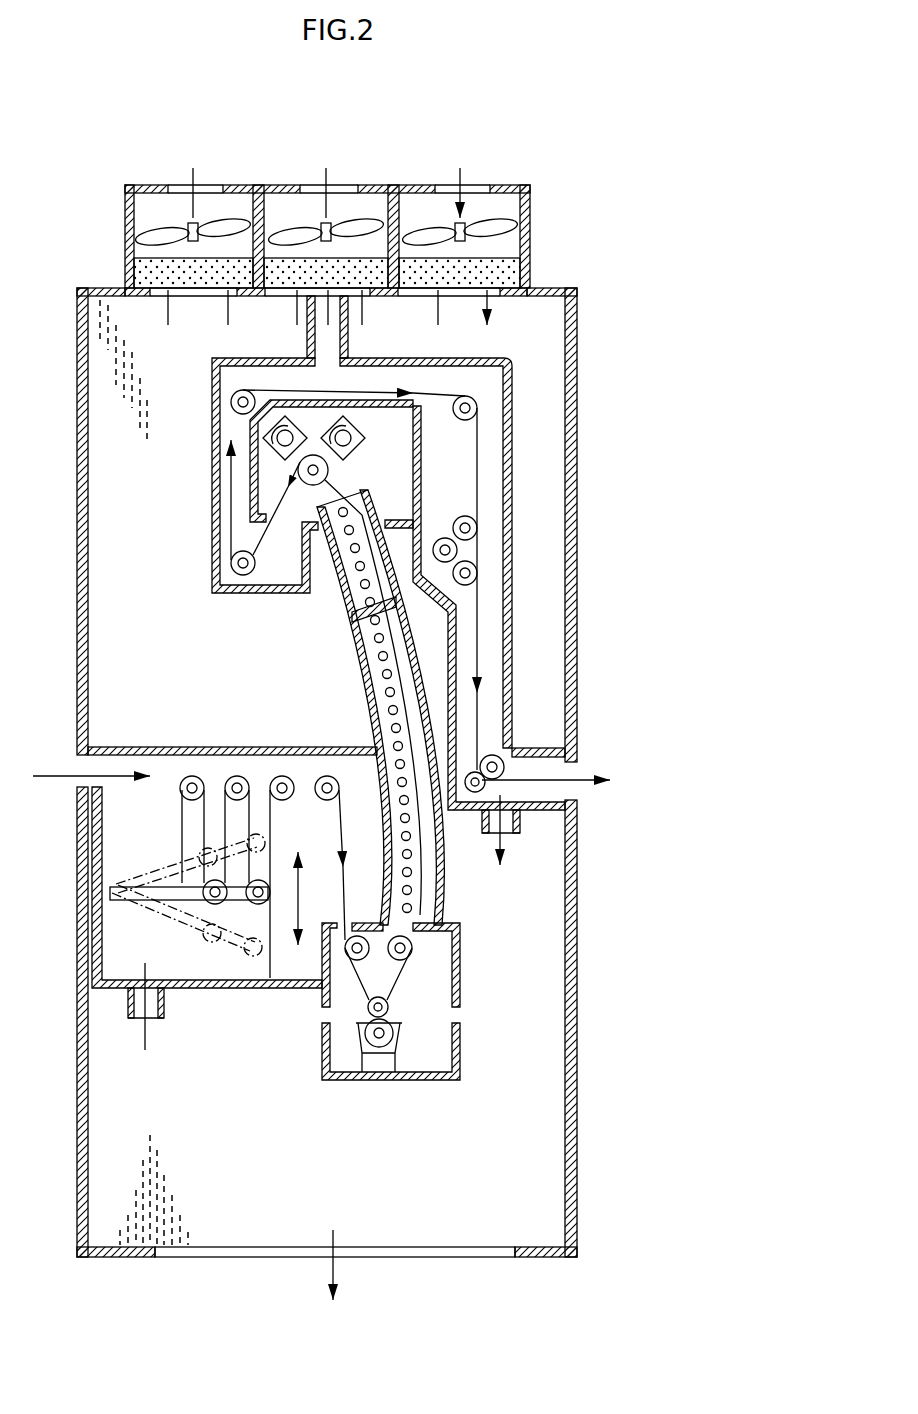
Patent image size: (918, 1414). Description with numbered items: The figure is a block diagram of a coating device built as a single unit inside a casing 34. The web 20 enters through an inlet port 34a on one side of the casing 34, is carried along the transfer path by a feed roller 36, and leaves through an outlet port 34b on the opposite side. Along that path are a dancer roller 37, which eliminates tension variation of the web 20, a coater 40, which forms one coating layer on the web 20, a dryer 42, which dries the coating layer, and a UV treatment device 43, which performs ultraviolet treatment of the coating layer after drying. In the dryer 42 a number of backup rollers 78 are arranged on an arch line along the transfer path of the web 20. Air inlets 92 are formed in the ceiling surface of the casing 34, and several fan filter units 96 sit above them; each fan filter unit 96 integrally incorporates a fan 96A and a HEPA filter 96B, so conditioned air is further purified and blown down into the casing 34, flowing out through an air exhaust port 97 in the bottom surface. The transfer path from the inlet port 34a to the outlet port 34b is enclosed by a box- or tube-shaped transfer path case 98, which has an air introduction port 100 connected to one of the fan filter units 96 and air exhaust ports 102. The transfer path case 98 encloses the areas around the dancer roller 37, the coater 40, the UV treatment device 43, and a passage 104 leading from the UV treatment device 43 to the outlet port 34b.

The web 20 is at (107, 770).
The casing 34 is at (576, 992).
The inlet port 34a is at (76, 766).
The outlet port 34b is at (570, 772).
The feed roller 36 is at (512, 768).
The dancer roller 37 is at (188, 932).
The coater 40 is at (405, 1028).
The dryer 42 is at (355, 672).
The UV treatment device 43 is at (283, 468).
The backup rollers 78 is at (362, 560).
The air inlets 92 is at (191, 295).
The fan filter unit 96 is at (240, 182).
The fan 96A is at (170, 232).
The HEPA filter 96B is at (133, 273).
The air exhaust port 97 is at (427, 1250).
The transfer path case 98 is at (212, 420).
The air introduction port 100 is at (322, 332).
The air exhaust ports 102 is at (507, 827).
The passage 104 is at (485, 653).